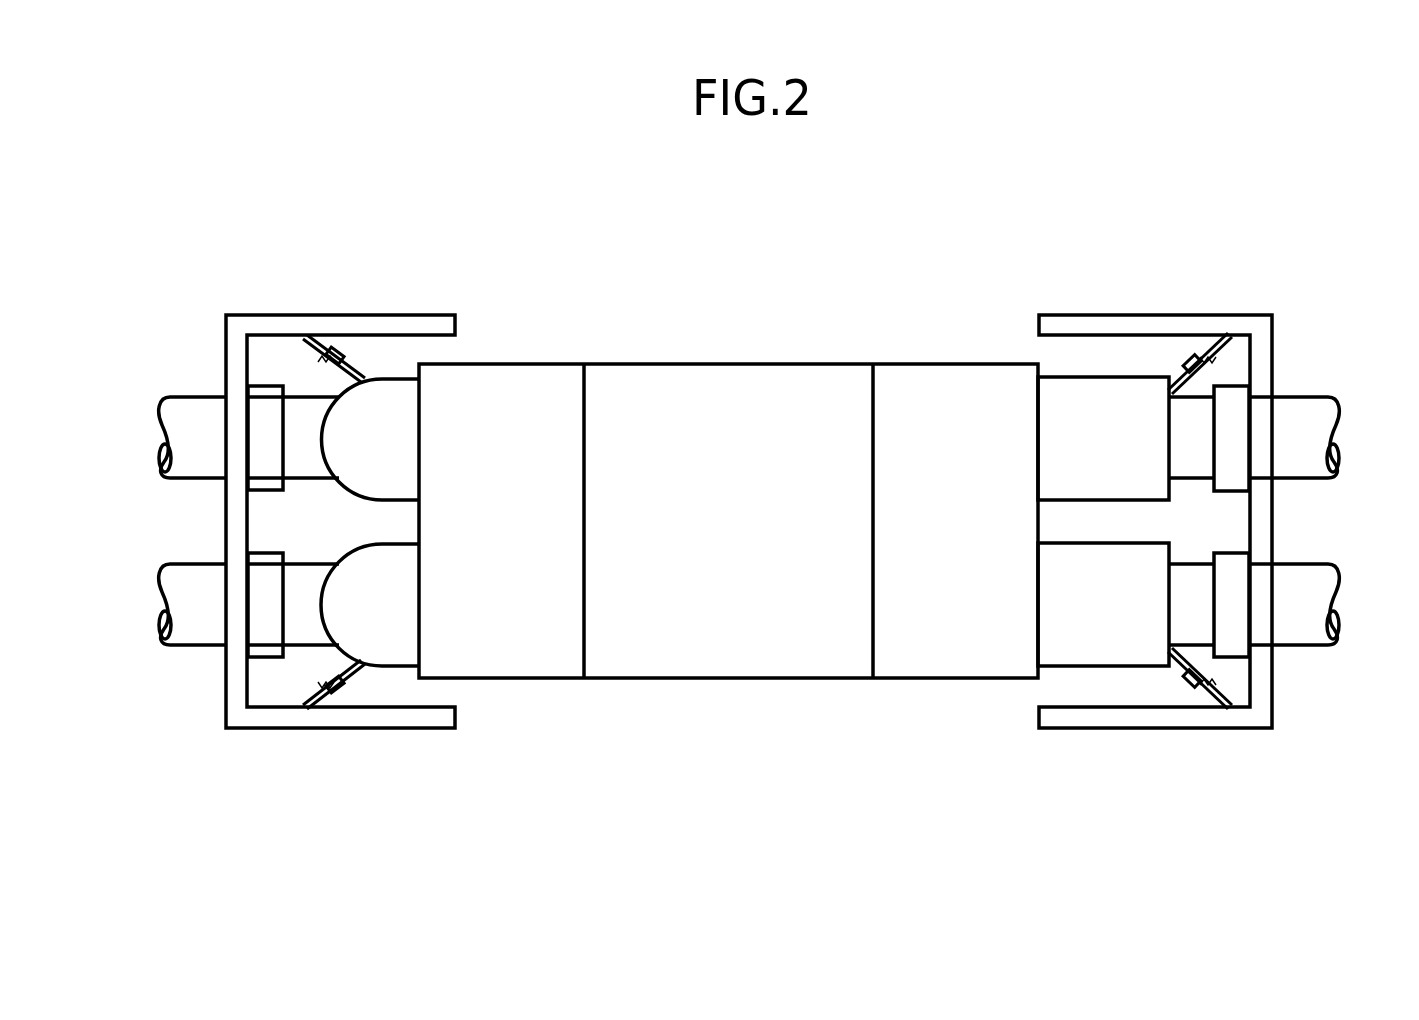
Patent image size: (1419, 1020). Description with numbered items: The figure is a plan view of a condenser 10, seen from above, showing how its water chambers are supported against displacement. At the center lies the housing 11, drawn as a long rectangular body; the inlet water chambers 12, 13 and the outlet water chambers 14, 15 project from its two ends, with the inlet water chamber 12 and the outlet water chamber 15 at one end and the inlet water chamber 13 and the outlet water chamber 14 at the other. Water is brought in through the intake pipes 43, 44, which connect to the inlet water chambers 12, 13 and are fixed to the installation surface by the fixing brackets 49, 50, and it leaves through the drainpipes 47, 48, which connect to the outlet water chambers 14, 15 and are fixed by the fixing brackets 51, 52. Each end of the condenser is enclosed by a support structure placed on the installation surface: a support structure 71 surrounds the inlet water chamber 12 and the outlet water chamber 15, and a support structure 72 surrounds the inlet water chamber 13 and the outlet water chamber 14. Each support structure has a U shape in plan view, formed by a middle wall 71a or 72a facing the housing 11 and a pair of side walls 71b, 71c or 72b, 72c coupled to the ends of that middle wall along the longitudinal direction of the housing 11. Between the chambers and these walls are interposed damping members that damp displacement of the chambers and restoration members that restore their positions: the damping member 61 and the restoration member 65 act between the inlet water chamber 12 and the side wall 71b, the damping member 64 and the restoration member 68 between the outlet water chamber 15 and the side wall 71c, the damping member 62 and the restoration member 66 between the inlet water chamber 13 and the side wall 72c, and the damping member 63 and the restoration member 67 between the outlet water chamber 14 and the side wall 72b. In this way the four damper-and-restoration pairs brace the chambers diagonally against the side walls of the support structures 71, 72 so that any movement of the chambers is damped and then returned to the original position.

The condenser 10 is at (746, 298).
The housing 11 is at (555, 663).
The inlet water chamber 12 is at (1108, 645).
The inlet water chamber 13 is at (391, 393).
The outlet water chamber 14 is at (395, 647).
The outlet water chamber 15 is at (1110, 390).
The intake pipe 43 is at (1310, 635).
The intake pipe 44 is at (190, 408).
The drainpipe 47 is at (193, 632).
The drainpipe 48 is at (1310, 408).
The fixing bracket 49 is at (1243, 637).
The fixing bracket 50 is at (262, 397).
The fixing bracket 51 is at (257, 637).
The fixing bracket 52 is at (1240, 395).
The damping member 61 is at (1193, 693).
The damping member 62 is at (335, 345).
The damping member 63 is at (335, 700).
The damping member 64 is at (1190, 352).
The restoration member 65 is at (1207, 673).
The restoration member 66 is at (320, 368).
The restoration member 67 is at (327, 672).
The restoration member 68 is at (1207, 368).
The support structure 71 is at (1058, 311).
The middle wall 71a is at (1263, 528).
The side wall 71b is at (1062, 718).
The side wall 71c is at (1130, 313).
The support structure 72 is at (446, 312).
The middle wall 72a is at (235, 523).
The side wall 72b is at (440, 718).
The side wall 72c is at (372, 313).